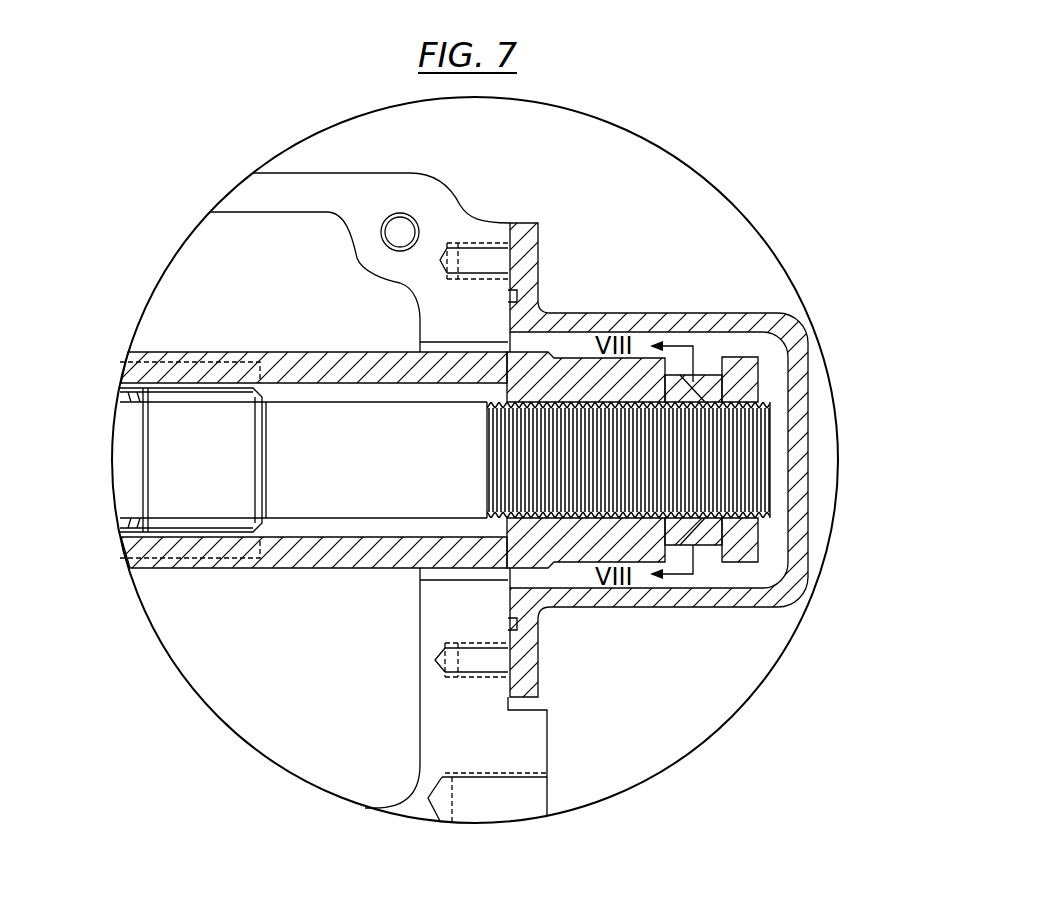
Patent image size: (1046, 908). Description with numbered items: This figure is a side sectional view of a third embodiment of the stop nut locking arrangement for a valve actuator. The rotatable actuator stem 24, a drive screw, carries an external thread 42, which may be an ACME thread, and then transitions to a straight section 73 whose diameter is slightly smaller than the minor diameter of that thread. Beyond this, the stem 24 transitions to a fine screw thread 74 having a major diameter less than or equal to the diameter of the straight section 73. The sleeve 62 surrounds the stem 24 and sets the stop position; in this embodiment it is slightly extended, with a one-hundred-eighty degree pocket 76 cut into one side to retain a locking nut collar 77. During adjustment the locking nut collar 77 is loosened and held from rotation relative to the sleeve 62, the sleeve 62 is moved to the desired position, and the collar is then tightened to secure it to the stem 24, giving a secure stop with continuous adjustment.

The actuator stem 24 is at (516, 561).
The external thread 42 is at (122, 397).
The sleeve 62 is at (282, 352).
The straight section 73 is at (305, 520).
The fine screw thread 74 is at (577, 520).
The pocket 76 is at (722, 520).
The locking nut collar 77 is at (705, 380).